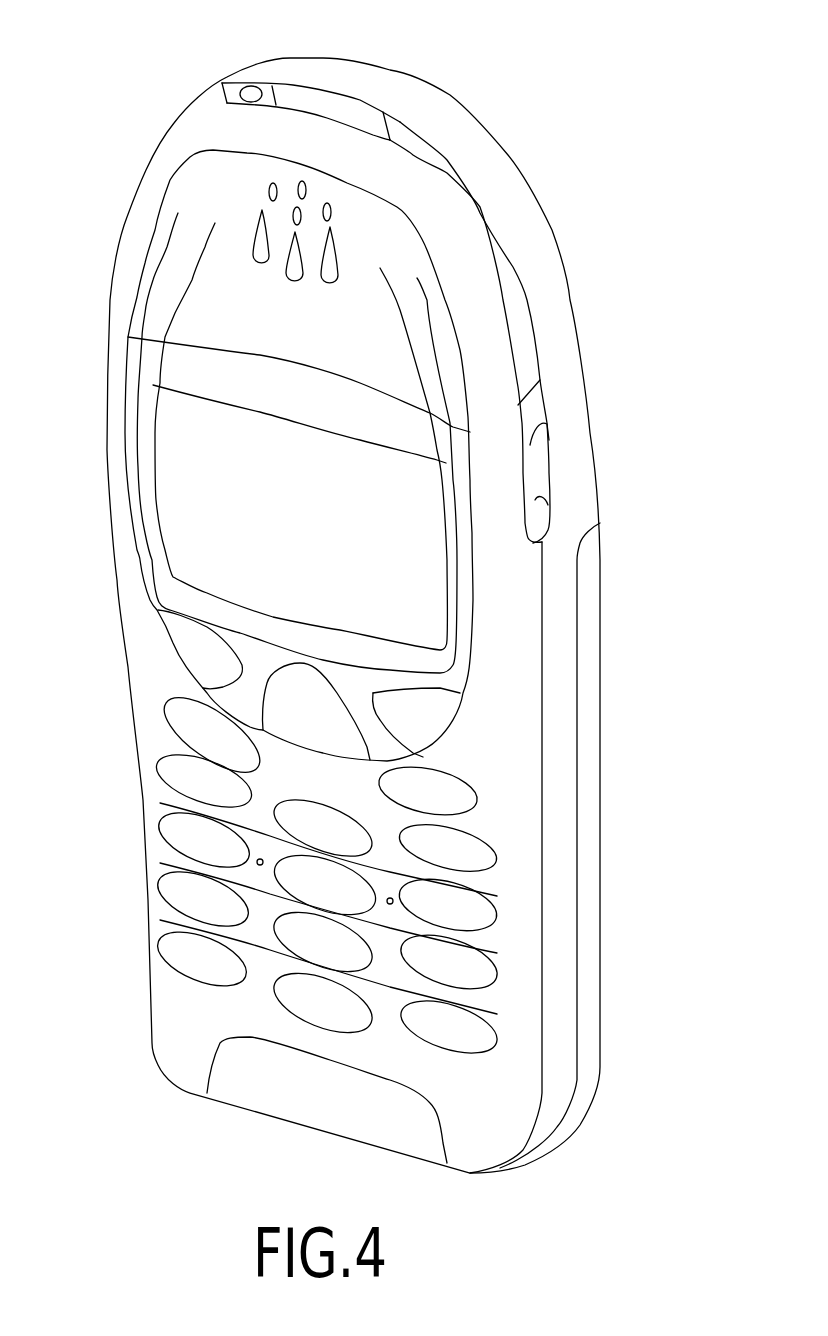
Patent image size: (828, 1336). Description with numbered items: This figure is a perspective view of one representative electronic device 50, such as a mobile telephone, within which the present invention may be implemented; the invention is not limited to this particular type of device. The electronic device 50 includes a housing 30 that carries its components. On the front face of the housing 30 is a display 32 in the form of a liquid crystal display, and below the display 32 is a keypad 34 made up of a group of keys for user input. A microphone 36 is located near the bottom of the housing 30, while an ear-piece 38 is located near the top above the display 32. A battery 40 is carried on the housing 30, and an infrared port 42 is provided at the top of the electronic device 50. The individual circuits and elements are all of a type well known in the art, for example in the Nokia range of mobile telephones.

The electronic device 50 is at (513, 72).
The housing 30 is at (553, 285).
The display 32 is at (414, 574).
The keypad 34 is at (445, 1032).
The microphone 36 is at (243, 1087).
The ear-piece 38 is at (283, 226).
The battery 40 is at (590, 1007).
The infrared port 42 is at (325, 107).